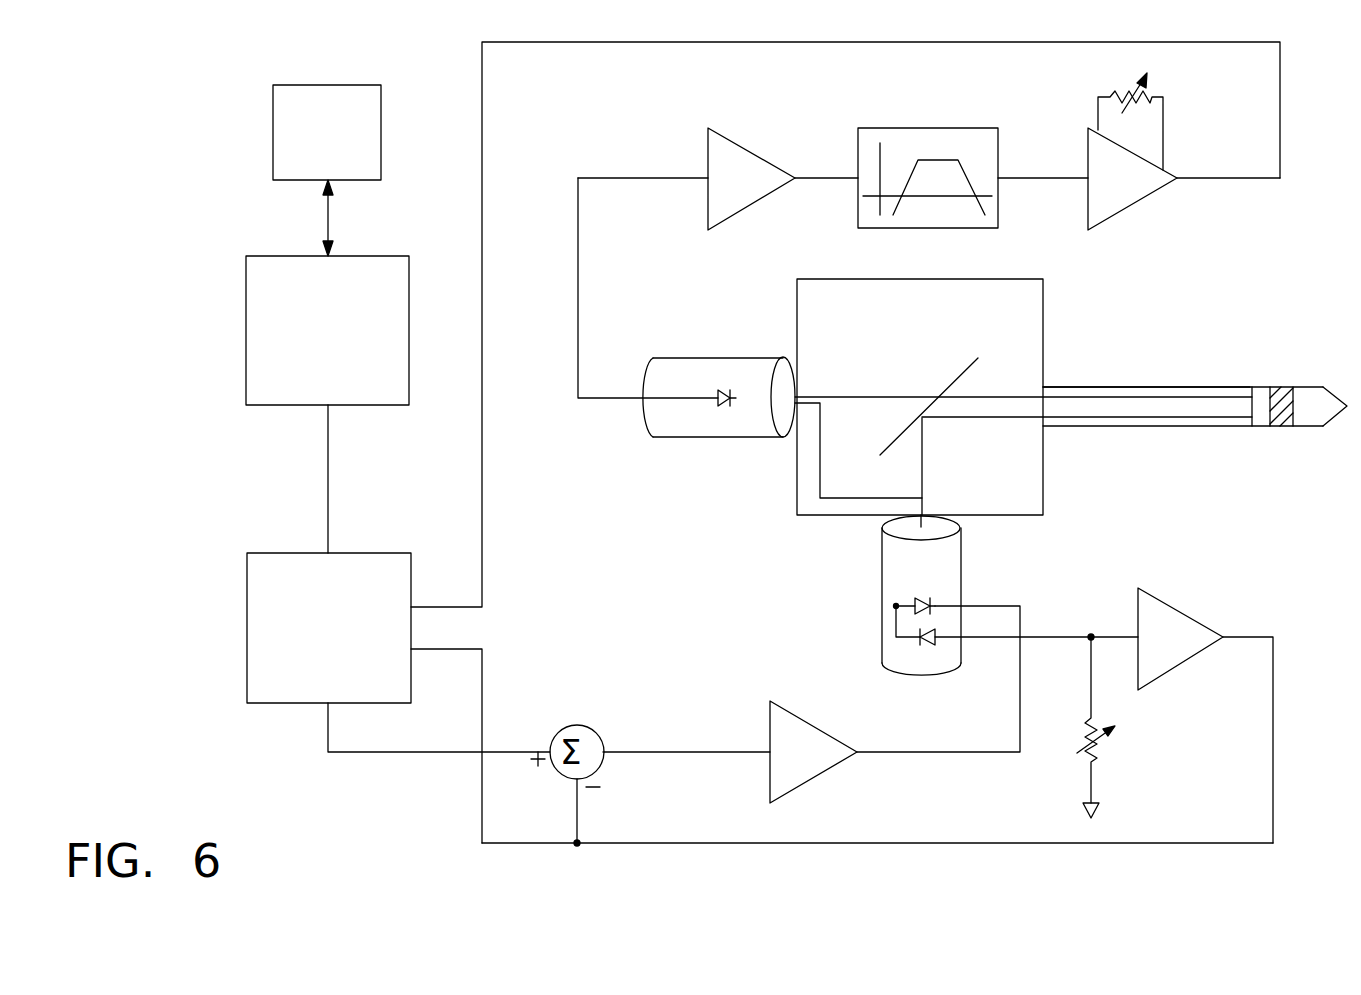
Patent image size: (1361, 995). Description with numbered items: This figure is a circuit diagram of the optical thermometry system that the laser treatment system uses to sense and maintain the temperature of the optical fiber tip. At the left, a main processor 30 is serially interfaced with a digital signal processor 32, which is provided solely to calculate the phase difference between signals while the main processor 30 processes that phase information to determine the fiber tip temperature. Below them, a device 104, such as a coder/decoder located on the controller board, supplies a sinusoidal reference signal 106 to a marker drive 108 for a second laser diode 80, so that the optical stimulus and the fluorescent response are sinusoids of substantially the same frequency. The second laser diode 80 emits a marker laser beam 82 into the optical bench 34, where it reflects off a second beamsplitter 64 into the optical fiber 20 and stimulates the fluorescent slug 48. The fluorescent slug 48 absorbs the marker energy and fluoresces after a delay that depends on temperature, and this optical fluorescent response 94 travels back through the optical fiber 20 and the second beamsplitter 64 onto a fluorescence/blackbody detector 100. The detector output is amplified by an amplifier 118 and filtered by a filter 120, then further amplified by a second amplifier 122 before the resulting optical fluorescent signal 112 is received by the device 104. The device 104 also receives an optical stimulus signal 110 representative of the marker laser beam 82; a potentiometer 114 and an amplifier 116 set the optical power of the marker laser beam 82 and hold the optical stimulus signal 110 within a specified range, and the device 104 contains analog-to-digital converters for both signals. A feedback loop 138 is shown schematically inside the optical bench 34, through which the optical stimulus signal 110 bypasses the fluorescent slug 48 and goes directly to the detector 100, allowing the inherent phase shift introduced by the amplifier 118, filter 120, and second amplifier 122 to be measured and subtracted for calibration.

The main processor 30 is at (273, 142).
The digital signal processor 32 is at (284, 256).
The device 104 is at (267, 553).
The optical fluorescent signal 112 is at (485, 472).
The sinusoidal reference signal 106 is at (386, 752).
The optical stimulus signal 110 is at (735, 843).
The marker drive 108 is at (835, 722).
The second laser diode 80 is at (961, 558).
The amplifier 116 is at (1180, 605).
The potentiometer 114 is at (1095, 750).
The optical bench 34 is at (1043, 310).
The fluorescence/blackbody detector 100 is at (718, 358).
The second beamsplitter 64 is at (955, 375).
The feedback loop 138 is at (818, 482).
The optical fiber 20 is at (1113, 427).
The optical fluorescent response 94 is at (1070, 393).
The marker laser beam 82 is at (1200, 418).
The fluorescent slug 48 is at (1282, 387).
The amplifier 118 is at (730, 138).
The filter 120 is at (968, 128).
The second amplifier 122 is at (1122, 213).